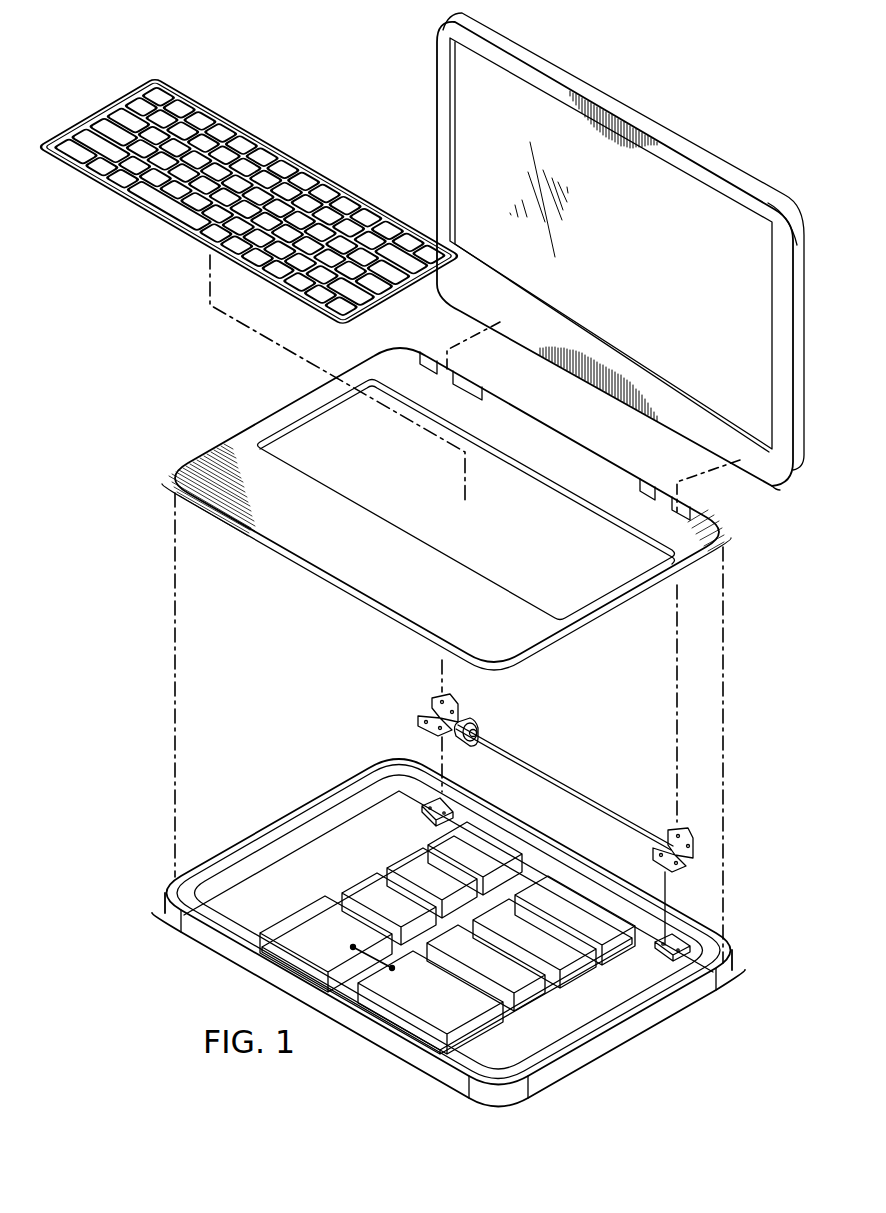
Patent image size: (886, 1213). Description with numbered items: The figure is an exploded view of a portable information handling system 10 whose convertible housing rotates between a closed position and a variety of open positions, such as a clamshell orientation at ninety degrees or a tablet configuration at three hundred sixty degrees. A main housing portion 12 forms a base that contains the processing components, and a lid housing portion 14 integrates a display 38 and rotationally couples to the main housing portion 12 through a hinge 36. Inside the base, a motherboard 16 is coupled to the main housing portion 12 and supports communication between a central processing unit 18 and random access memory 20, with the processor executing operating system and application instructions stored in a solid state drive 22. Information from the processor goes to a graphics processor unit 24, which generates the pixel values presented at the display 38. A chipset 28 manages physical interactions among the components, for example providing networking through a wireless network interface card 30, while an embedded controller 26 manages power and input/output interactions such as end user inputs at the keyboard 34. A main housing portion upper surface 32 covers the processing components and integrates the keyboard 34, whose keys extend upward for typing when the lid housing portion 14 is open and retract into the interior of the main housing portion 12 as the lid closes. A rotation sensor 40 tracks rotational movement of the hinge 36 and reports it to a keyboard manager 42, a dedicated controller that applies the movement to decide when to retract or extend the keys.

The information handling system 10 is at (304, 92).
The main housing portion 12 is at (696, 1014).
The lid housing portion 14 is at (634, 104).
The motherboard 16 is at (340, 902).
The central processing unit (CPU) 18 is at (504, 860).
The random access memory (RAM) 20 is at (410, 860).
The solid state drive 22 is at (372, 884).
The graphics processor unit (GPU) 24 is at (556, 890).
The embedded controller 26 is at (304, 925).
The chipset 28 is at (584, 956).
The wireless network interface card (WNIC) 30 is at (531, 979).
The main housing portion upper surface 32 is at (303, 540).
The keyboard 34 is at (102, 110).
The hinge 36 is at (620, 806).
The display 38 is at (627, 255).
The rotation sensor 40 is at (482, 726).
The keyboard manager 42 is at (498, 1002).